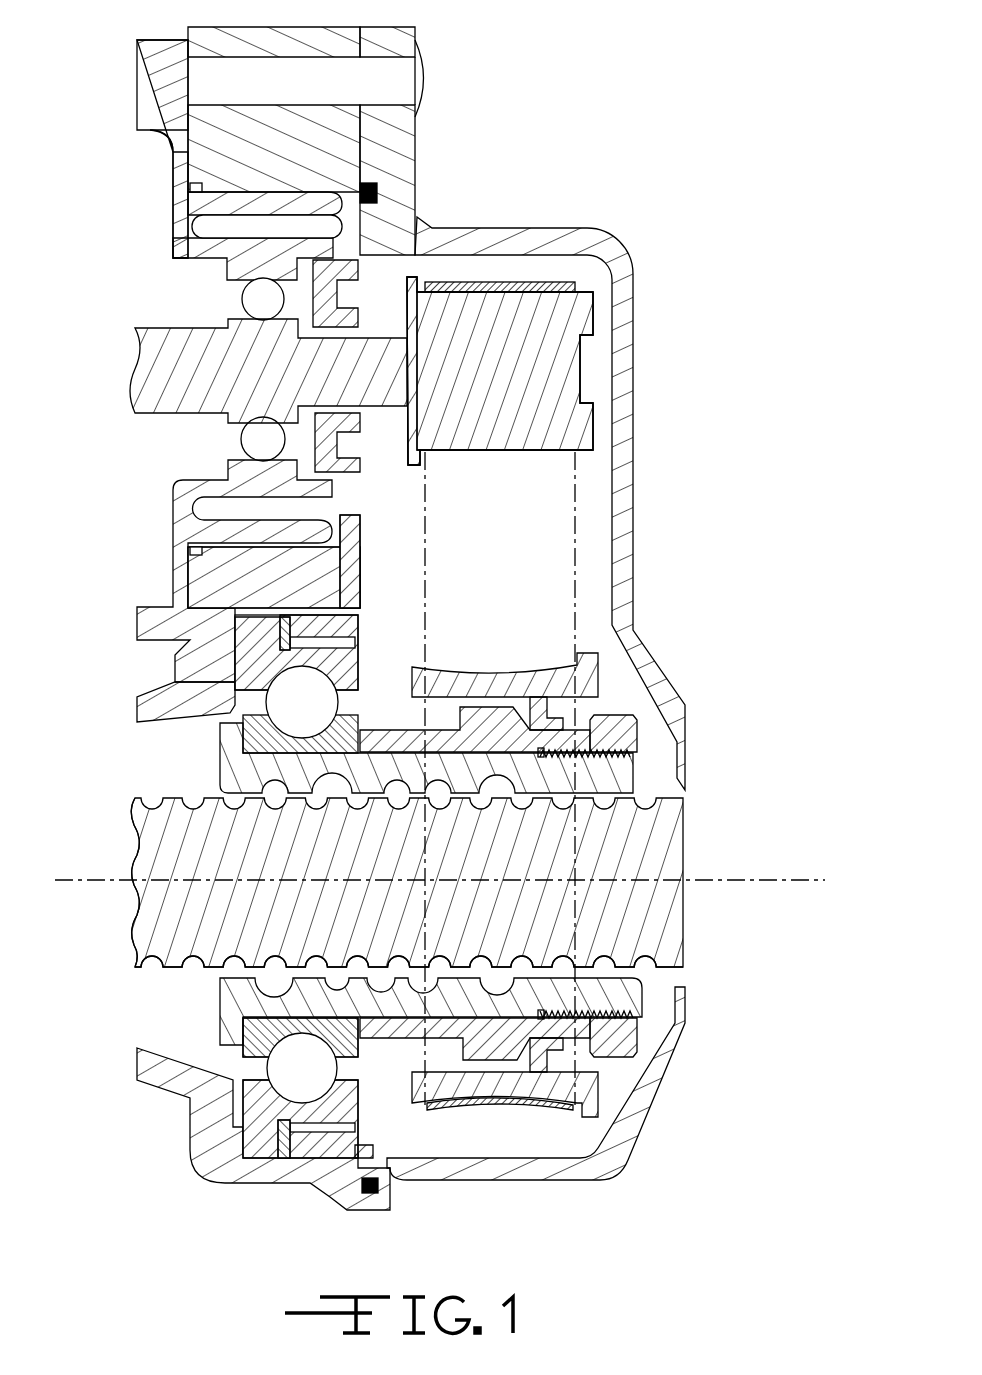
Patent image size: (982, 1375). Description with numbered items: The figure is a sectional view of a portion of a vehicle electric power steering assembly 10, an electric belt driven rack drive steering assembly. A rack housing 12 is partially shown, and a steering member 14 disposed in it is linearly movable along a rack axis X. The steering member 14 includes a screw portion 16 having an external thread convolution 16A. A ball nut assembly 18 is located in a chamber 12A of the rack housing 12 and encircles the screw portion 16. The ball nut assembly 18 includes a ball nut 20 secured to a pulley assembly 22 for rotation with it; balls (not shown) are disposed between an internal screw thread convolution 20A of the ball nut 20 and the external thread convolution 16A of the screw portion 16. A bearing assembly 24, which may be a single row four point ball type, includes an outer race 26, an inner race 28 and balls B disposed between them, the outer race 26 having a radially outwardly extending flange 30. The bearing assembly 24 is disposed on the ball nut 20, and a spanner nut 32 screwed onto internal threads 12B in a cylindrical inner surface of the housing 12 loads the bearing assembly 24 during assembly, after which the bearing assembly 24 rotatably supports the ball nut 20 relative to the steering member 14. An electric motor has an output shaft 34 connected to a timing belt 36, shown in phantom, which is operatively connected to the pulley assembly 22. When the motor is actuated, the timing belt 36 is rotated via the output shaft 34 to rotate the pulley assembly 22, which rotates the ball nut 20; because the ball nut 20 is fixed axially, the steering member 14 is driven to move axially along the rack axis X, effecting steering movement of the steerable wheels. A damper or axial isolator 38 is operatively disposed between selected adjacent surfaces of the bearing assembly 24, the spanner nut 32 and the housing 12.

The vehicle electric power steering assembly 10 is at (668, 585).
The rack housing 12 is at (662, 1118).
The chamber 12A is at (640, 782).
The internal threads 12B is at (362, 612).
The steering member 14 is at (692, 845).
The screw portion 16 is at (182, 838).
The external thread convolution 16A is at (192, 962).
The ball nut assembly 18 is at (214, 765).
The ball nut 20 is at (640, 990).
The internal screw thread convolution 20A is at (495, 967).
The pulley assembly 22 is at (552, 1118).
The bearing assembly 24 is at (360, 728).
The outer race 26 is at (372, 658).
The inner race 28 is at (372, 752).
The flange 30 is at (235, 657).
The spanner nut 32 is at (318, 1143).
The output shaft 34 is at (178, 342).
The timing belt 36 is at (577, 488).
The damper 38 is at (258, 1155).
The balls B is at (270, 703).
The rack axis X is at (768, 886).